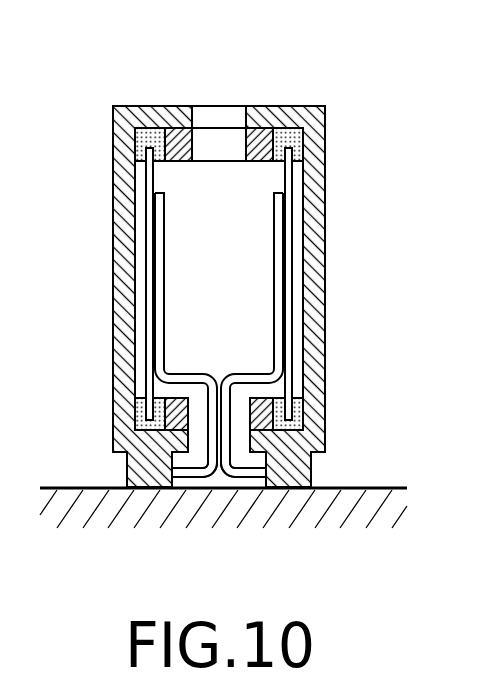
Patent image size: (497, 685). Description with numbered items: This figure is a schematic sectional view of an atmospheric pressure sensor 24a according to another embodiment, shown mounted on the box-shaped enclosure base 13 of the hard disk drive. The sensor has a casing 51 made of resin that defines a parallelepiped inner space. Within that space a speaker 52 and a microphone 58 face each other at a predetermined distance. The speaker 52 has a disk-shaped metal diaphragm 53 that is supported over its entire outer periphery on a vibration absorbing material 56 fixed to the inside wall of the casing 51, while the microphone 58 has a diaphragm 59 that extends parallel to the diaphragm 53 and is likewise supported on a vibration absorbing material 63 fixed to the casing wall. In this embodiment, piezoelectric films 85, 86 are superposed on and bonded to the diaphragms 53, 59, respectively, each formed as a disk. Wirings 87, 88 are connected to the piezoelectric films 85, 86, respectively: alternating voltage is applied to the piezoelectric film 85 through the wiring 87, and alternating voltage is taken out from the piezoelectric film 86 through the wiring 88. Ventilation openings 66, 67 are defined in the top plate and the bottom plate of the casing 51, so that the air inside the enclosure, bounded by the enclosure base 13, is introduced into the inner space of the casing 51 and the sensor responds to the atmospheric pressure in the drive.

The atmospheric pressure sensor 24a is at (135, 104).
The casing 51 is at (313, 106).
The ventilation opening 66 is at (244, 106).
The vibration absorbing material 56 is at (137, 132).
The vibration absorbing material 63 is at (297, 142).
The diaphragm 53 is at (150, 240).
The diaphragm 59 is at (290, 238).
The speaker 52 is at (146, 190).
The microphone 58 is at (292, 191).
The piezoelectric film 85 is at (162, 237).
The piezoelectric film 86 is at (278, 250).
The wiring 87 is at (190, 472).
The wiring 88 is at (243, 472).
The ventilation opening 67 is at (188, 431).
The enclosure base 13 is at (395, 488).